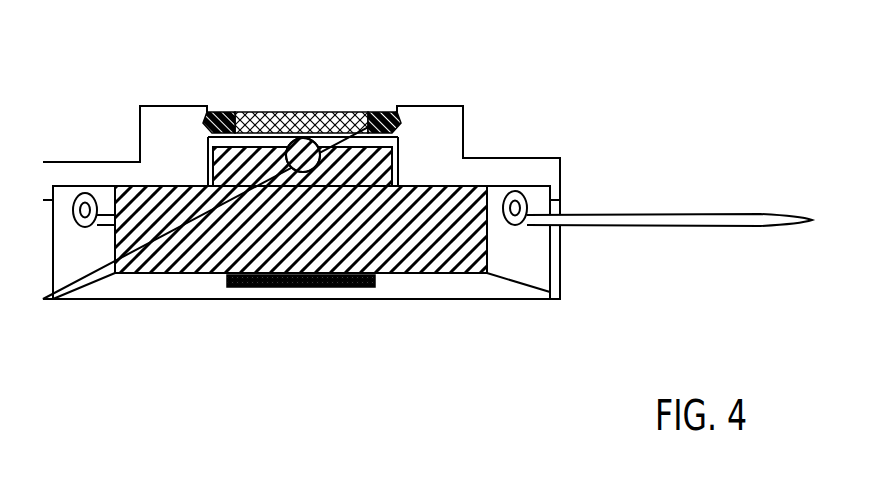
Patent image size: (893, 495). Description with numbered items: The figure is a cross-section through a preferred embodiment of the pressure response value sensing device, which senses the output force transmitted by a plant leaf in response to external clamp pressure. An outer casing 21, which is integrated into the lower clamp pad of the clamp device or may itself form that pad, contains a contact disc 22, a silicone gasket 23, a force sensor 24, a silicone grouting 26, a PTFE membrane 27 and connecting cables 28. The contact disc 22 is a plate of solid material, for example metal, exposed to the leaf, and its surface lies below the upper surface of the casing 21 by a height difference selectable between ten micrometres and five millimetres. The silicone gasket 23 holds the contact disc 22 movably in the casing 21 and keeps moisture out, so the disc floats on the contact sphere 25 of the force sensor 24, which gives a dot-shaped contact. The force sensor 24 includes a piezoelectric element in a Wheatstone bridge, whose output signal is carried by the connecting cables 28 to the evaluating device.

The outer casing 21 is at (148, 132).
The contact disc 22 is at (283, 110).
The silicone gasket 23 is at (383, 110).
The force sensor 24 is at (488, 187).
The contact sphere 25 is at (300, 152).
The silicone grouting 26 is at (530, 259).
The PTFE membrane 27 is at (355, 283).
The connecting cables 28 is at (613, 213).